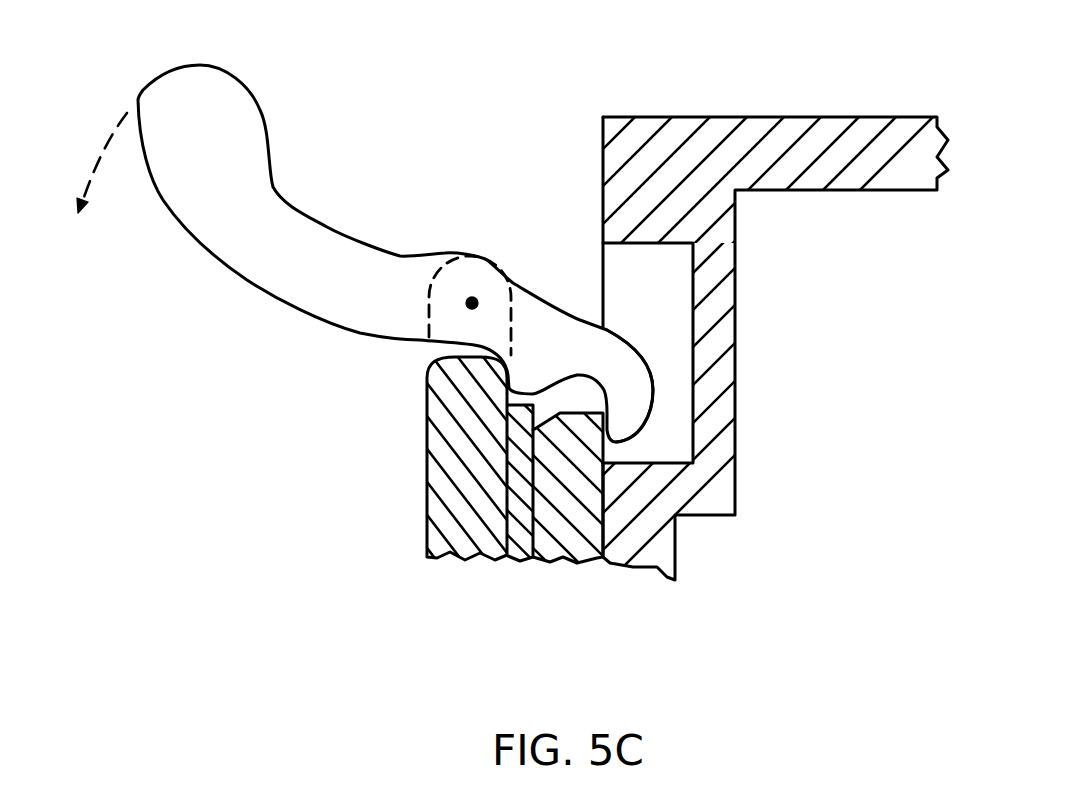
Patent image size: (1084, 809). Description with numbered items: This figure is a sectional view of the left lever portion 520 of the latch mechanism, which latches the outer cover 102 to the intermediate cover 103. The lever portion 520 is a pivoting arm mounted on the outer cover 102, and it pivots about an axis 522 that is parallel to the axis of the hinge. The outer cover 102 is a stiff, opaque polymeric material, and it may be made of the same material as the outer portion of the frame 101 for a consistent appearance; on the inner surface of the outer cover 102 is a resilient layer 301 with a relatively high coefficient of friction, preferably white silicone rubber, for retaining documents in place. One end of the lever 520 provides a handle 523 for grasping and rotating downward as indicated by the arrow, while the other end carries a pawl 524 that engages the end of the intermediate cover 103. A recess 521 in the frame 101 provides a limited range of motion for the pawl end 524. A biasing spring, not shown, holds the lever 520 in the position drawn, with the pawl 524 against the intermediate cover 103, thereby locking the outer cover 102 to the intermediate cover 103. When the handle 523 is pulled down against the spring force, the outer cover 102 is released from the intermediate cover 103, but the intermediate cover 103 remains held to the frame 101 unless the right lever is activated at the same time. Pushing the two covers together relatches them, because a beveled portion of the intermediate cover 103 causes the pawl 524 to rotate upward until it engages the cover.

The frame 101 is at (652, 158).
The outer cover 102 is at (445, 480).
The intermediate cover 103 is at (560, 543).
The resilient layer 301 is at (522, 545).
The left lever portion 520 is at (400, 200).
The recess 521 is at (619, 291).
The axis 522 is at (472, 303).
The handle 523 is at (172, 129).
The pawl 524 is at (620, 377).